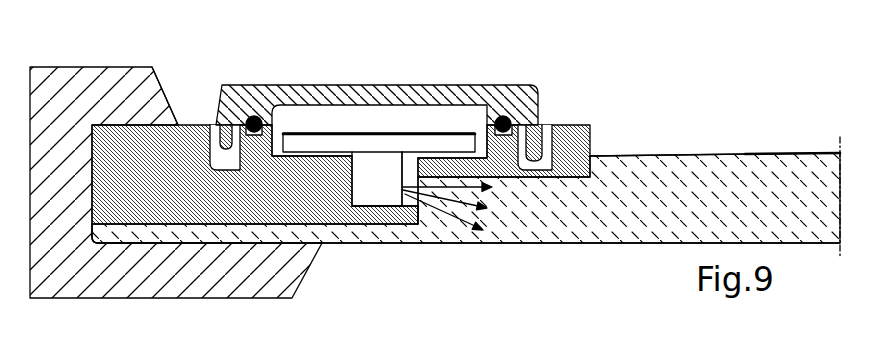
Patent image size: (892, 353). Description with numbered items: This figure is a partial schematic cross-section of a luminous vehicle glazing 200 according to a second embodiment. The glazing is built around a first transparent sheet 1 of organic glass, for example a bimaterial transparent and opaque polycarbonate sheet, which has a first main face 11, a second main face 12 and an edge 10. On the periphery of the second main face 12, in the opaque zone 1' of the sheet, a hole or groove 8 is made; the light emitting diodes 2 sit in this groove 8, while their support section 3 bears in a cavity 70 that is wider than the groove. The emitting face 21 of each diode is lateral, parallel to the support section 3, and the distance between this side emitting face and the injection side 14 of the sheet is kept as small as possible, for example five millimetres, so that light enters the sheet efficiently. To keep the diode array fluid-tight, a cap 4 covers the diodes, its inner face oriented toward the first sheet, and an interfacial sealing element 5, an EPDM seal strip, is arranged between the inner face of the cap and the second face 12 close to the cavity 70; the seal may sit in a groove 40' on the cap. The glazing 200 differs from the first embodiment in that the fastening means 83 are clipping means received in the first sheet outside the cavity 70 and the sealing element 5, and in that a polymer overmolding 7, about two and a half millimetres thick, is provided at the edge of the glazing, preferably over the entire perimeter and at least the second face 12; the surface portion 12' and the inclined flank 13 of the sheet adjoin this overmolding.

The first transparent sheet 1 is at (466, 175).
The opaque zone 1' is at (351, 202).
The light emitting diodes 2 is at (375, 163).
The support section 3 is at (297, 143).
The cap 4 is at (450, 90).
The interfacial sealing element 5 is at (253, 113).
The polymer overmolding 7 is at (62, 82).
The hole (groove) 8 is at (410, 167).
The edge 10 is at (72, 228).
The first main face 11 is at (540, 242).
The second main face 12 is at (667, 127).
The roughened surface portion 12' is at (792, 125).
The inclined surface 13 is at (182, 124).
The injection side 14 is at (408, 200).
The emitting face 21 is at (380, 188).
The contact pad 40' is at (379, 233).
The cavity 70 is at (337, 115).
The fastening means 83 is at (220, 143).
The luminous vehicle glazing 200 is at (435, 173).